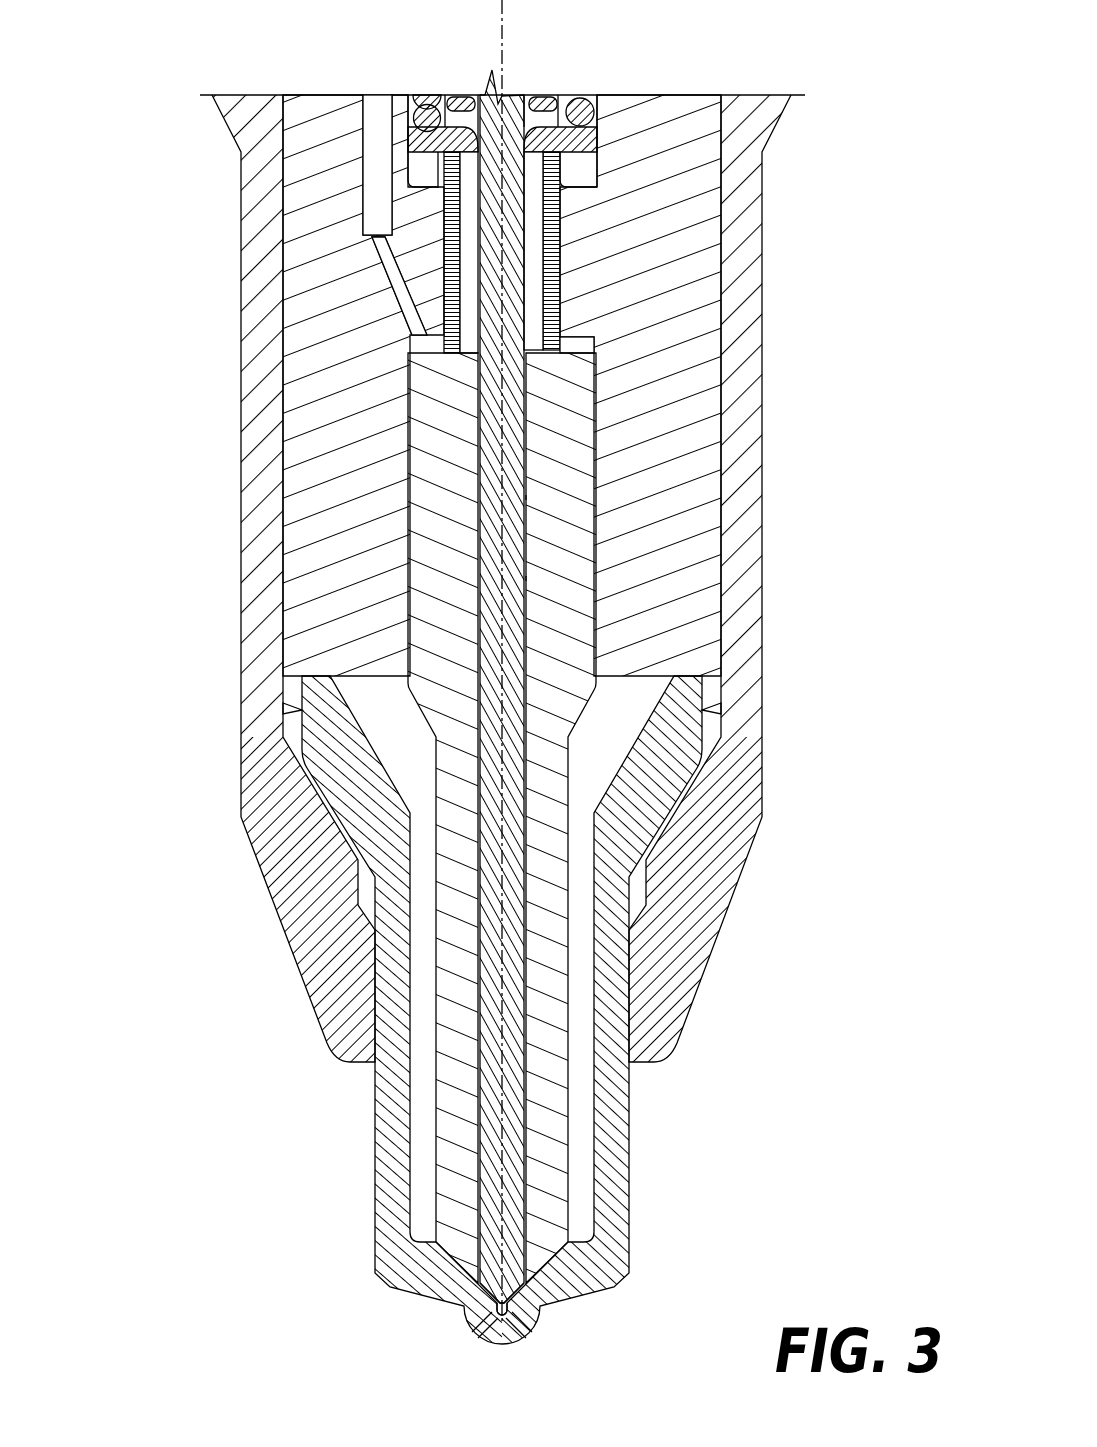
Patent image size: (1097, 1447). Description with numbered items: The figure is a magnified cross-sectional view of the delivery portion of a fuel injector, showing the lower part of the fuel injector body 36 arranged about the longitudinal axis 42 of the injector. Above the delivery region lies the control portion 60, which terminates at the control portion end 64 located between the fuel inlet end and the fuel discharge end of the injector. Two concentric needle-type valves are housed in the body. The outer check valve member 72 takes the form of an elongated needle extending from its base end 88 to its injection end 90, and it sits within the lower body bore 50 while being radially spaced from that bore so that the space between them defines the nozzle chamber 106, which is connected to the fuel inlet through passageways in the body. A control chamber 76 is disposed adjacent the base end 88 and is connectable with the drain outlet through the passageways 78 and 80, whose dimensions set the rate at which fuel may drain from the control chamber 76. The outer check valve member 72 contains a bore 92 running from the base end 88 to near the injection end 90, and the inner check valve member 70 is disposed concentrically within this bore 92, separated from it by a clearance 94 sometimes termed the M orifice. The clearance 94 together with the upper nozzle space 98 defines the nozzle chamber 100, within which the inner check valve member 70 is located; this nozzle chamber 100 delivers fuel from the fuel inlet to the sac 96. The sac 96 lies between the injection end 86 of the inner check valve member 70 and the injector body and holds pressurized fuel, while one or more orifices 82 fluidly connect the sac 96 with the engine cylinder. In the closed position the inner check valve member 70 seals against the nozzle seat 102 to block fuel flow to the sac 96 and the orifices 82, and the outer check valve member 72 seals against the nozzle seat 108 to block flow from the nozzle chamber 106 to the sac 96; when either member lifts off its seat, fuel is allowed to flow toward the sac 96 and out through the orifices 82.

The fuel injector body 36 is at (684, 1302).
The longitudinal axis 42 is at (505, 50).
The lower body bore 50 is at (584, 973).
The control portion 60 is at (150, 112).
The control portion end 64 is at (830, 76).
The check valve member 70 is at (517, 183).
The check valve member 72 is at (575, 437).
The control chamber 76 is at (590, 343).
The passageway 78 is at (372, 193).
The passageway 80 is at (380, 273).
The orifice 82 is at (474, 1336).
The injection end 86 is at (522, 1299).
The base end 88 is at (402, 381).
The injection end 90 is at (450, 1274).
The bore 92 is at (527, 497).
The clearance 94 is at (527, 578).
The sac 96 is at (504, 1338).
The upper nozzle space 98 is at (538, 205).
The nozzle chamber 100 is at (563, 248).
The nozzle seat 102 is at (470, 1305).
The nozzle chamber 106 is at (410, 1100).
The nozzle seat 108 is at (530, 1290).